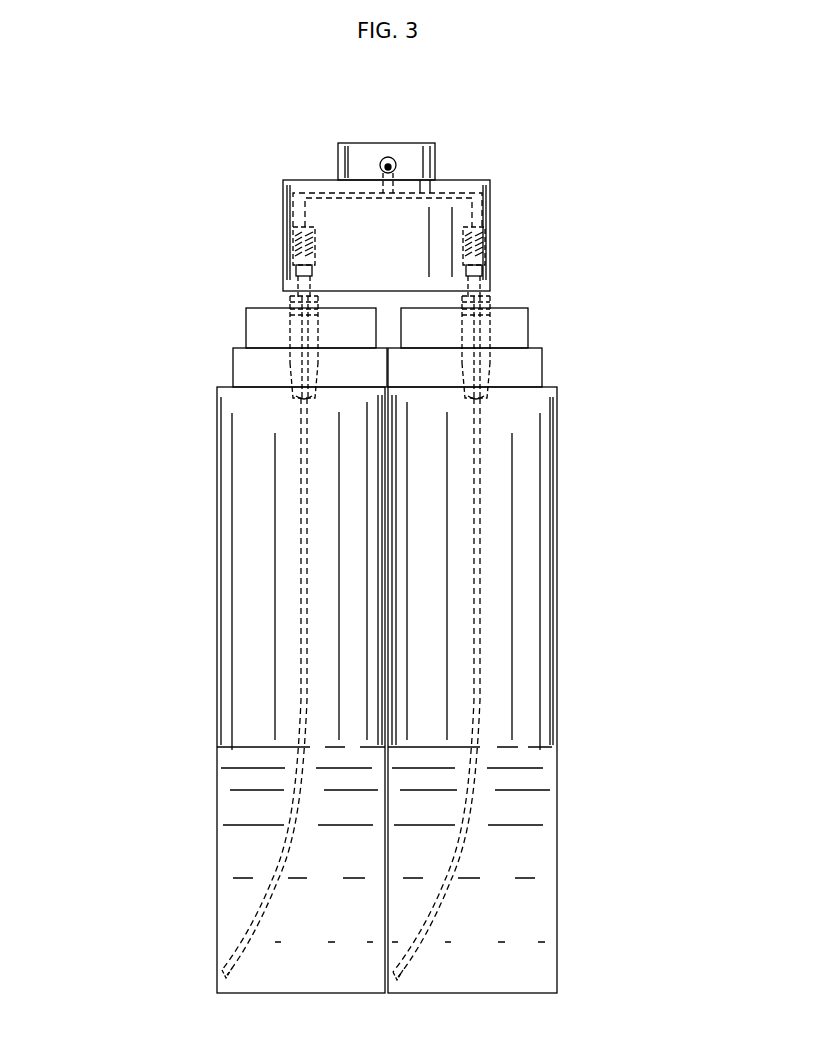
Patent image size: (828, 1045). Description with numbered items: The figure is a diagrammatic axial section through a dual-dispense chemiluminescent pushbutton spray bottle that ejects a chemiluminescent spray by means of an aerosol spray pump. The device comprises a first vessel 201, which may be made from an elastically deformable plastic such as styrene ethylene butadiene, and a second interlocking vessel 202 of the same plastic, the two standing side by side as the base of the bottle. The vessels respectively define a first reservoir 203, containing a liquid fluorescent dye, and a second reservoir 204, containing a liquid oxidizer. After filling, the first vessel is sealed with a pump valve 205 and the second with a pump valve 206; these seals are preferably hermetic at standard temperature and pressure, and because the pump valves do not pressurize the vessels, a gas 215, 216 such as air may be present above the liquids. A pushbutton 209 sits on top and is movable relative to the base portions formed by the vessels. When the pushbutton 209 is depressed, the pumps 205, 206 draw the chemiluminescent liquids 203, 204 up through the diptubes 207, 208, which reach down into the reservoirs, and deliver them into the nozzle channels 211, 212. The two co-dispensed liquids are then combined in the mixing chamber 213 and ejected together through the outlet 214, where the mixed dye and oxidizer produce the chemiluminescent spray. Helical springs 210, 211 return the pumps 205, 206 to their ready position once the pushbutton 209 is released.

The first vessel 201 is at (555, 492).
The second interlocking vessel 202 is at (214, 506).
The first reservoir 203 is at (530, 805).
The second reservoir 204 is at (234, 803).
The pump valve 205 is at (490, 337).
The pump valve 206 is at (283, 337).
The diptube 207 is at (413, 948).
The diptube 208 is at (222, 942).
The pushbutton 209 is at (333, 160).
The helical spring 210 is at (490, 250).
The nozzle channel 211 is at (283, 242).
The nozzle channel 212 is at (280, 185).
The mixing chamber 213 is at (398, 189).
The outlet 214 is at (398, 162).
The gas 215 is at (525, 596).
The gas 216 is at (256, 590).